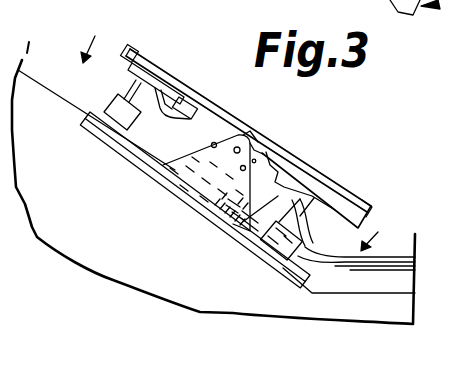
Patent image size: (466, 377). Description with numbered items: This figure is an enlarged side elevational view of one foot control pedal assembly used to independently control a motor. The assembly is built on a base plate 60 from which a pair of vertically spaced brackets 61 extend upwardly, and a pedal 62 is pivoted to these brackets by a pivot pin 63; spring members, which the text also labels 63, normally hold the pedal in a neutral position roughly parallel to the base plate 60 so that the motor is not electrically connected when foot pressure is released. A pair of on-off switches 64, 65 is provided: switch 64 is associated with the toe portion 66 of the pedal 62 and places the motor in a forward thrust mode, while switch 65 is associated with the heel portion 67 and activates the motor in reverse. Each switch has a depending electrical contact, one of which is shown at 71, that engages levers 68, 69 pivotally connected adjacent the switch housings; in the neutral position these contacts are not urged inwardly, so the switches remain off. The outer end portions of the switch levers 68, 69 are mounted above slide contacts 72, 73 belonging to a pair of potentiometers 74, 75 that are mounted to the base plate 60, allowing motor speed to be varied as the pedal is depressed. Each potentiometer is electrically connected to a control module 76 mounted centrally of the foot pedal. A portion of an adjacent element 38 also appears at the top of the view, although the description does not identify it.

The arm 38 is at (384, 1).
The base plate 60 is at (185, 205).
The brackets 61 is at (184, 157).
The pedal 62 is at (244, 97).
The pivot pin 63 is at (266, 146).
The on-off switch 64 is at (184, 90).
The on-off switch 65 is at (297, 172).
The toe portion 66 is at (95, 31).
The heel portion 67 is at (337, 200).
The switch lever 68 is at (141, 48).
The switch lever 69 is at (316, 217).
The depending electrical contact 71 is at (232, 233).
The slide contact 72 is at (126, 84).
The slide contact 73 is at (349, 273).
The potentiometer 74 is at (100, 118).
The potentiometer 75 is at (289, 277).
The control module 76 is at (163, 192).